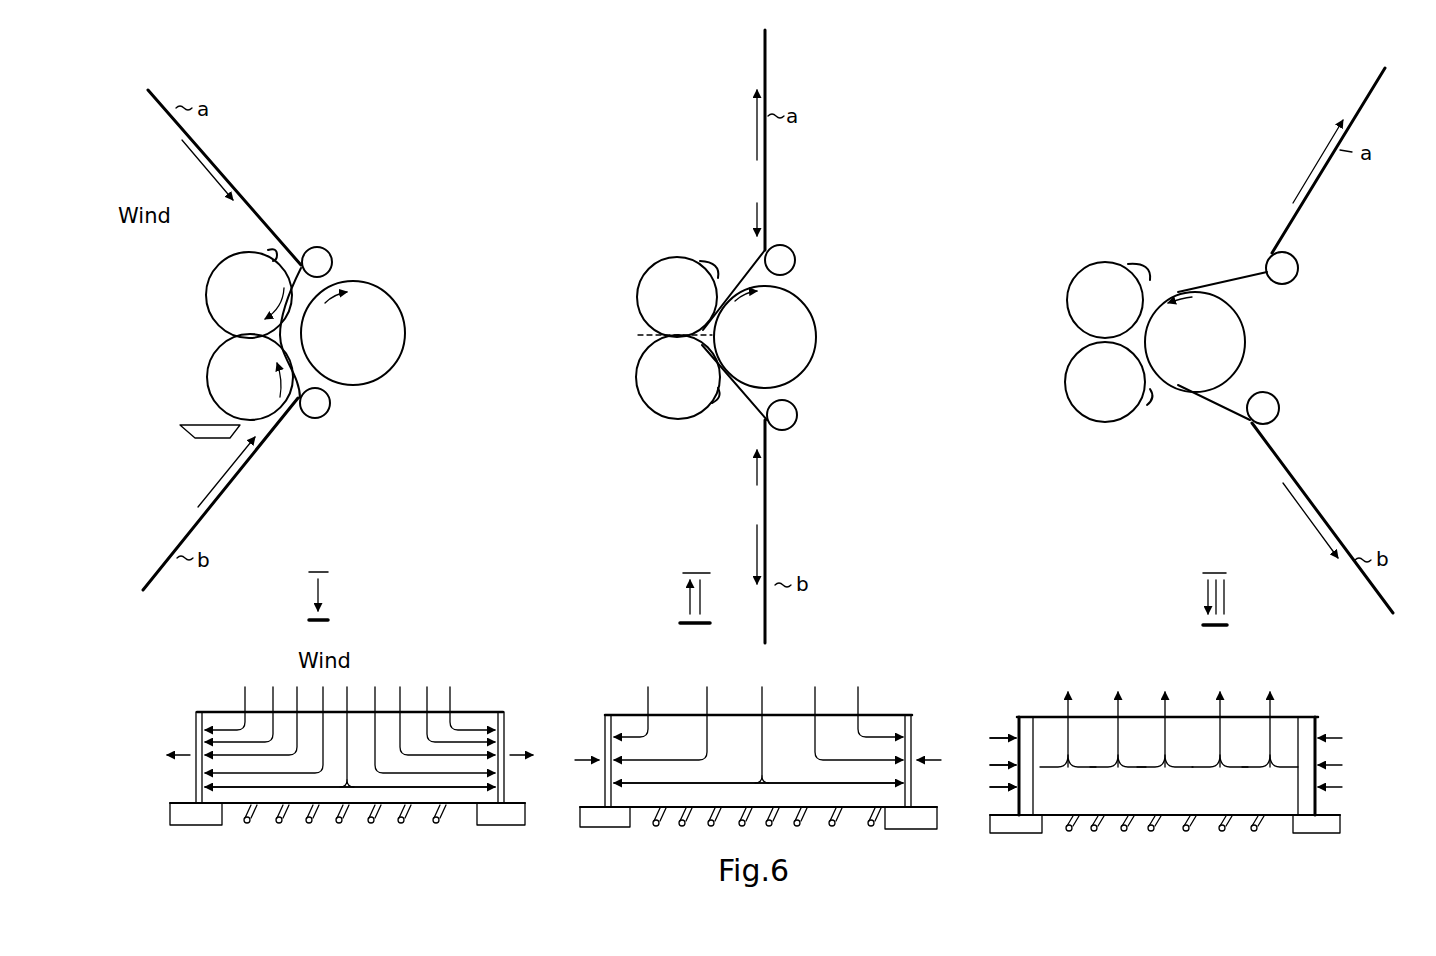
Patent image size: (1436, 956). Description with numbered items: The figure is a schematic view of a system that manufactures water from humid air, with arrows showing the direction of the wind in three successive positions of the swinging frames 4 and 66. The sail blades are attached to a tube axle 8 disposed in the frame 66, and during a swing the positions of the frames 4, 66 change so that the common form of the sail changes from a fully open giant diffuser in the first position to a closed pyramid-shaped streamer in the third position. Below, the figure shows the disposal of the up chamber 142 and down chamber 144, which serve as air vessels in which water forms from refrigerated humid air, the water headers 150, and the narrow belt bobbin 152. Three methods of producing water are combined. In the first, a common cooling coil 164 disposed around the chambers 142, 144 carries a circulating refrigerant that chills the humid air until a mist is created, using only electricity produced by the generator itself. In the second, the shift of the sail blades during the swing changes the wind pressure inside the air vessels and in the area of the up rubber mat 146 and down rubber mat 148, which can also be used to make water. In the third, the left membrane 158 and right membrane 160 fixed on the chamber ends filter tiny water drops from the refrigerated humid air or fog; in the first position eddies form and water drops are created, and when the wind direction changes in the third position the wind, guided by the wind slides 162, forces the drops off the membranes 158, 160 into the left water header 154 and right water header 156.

The frame 4 is at (172, 110).
The tube axle 8 is at (358, 281).
The frame 66 is at (190, 527).
The up chamber for refrigeratory of humid air 142 is at (647, 262).
The down chamber for refrigeratory of humid air 144 is at (655, 337).
The up rubber mat 146 is at (1207, 278).
The down rubber mat 148 is at (1232, 408).
The water headers 150 is at (207, 423).
The narrow belt bobbin 152 is at (312, 403).
The left water header 154 is at (205, 826).
The right water header 156 is at (490, 828).
The left membrane 158 is at (1018, 772).
The right membrane 160 is at (1310, 770).
The wind slides 162 is at (1307, 788).
The cooling coil 164 is at (873, 827).